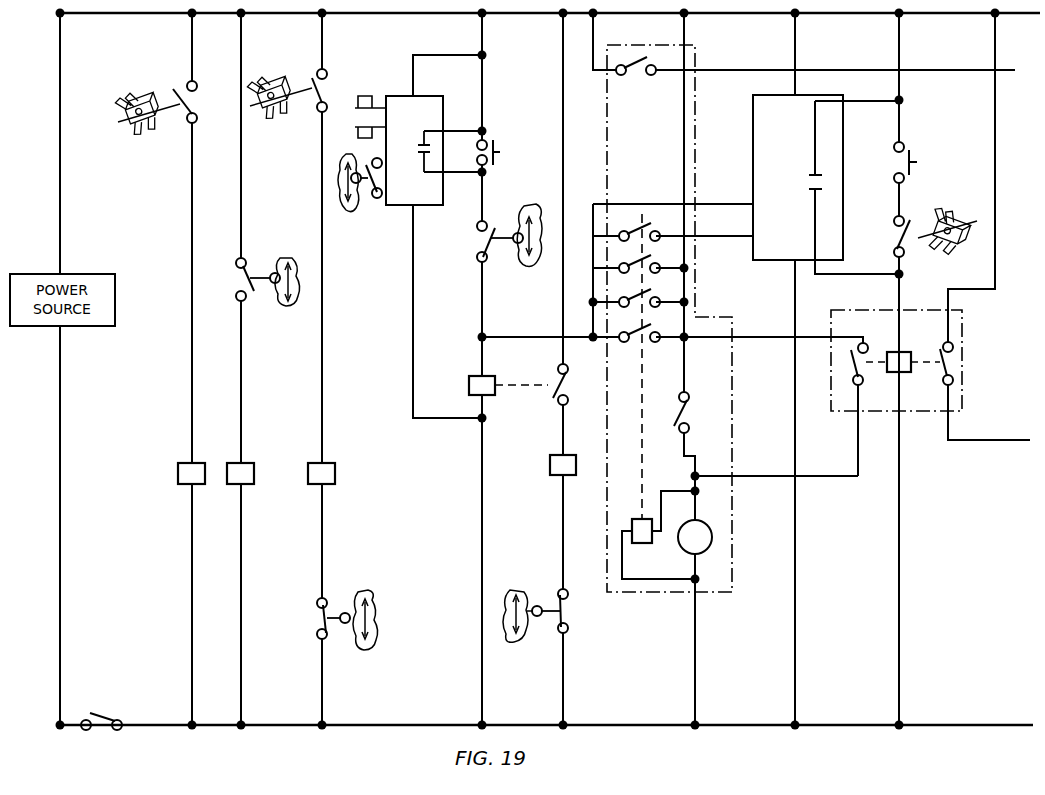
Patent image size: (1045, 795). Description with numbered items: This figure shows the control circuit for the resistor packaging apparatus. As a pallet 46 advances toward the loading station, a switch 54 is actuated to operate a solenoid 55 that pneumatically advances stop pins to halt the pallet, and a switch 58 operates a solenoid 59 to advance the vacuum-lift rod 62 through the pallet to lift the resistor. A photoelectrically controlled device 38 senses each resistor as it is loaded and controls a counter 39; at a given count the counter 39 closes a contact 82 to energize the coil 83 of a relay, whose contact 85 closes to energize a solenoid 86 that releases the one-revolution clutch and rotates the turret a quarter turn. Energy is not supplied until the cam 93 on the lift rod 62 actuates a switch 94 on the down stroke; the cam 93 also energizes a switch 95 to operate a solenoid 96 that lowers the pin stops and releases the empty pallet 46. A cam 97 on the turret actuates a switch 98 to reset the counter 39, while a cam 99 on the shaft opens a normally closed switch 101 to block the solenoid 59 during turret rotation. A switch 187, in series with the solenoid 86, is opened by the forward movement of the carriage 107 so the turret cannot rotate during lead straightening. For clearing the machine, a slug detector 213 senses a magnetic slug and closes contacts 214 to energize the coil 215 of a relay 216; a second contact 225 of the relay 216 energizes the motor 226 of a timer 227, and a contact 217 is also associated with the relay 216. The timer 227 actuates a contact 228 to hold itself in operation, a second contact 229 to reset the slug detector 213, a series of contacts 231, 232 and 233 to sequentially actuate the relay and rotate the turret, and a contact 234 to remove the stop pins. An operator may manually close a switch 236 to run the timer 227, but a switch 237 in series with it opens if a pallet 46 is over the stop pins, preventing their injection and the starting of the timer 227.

The photoelectrically controlled device 38 is at (355, 118).
The counter 39 is at (426, 96).
The pallet 46 is at (150, 142).
The switch 54 is at (192, 98).
The solenoid 55 is at (188, 463).
The switch 58 is at (324, 88).
The solenoid 59 is at (323, 463).
The vacuum-lift rod 62 is at (522, 210).
The contact 82 is at (418, 147).
The coil 83 is at (478, 395).
The contact 85 is at (563, 376).
The solenoid 86 is at (558, 455).
The cam 93 is at (520, 246).
The switch 94 is at (488, 240).
The switch 95 is at (244, 280).
The solenoid 96 is at (243, 463).
The cam 97 is at (340, 208).
The switch 98 is at (370, 196).
The cam 99 is at (376, 622).
The normally closed switch 101 is at (324, 618).
The carriage 107 is at (522, 588).
The switch 187 is at (566, 616).
The slug detector 213 is at (818, 96).
The contacts 214 is at (811, 173).
The coil 215 is at (902, 372).
The relay 216 is at (906, 312).
The relay contact 217 is at (951, 364).
The second contact 225 is at (848, 364).
The motor 226 is at (698, 521).
The timer 227 is at (710, 592).
The contact 228 is at (680, 404).
The second contact 229 is at (639, 230).
The contact 231 is at (643, 332).
The contact 232 is at (643, 298).
The contact 233 is at (643, 264).
The contact 234 is at (641, 62).
The switch 236 is at (912, 156).
The switch 237 is at (900, 238).